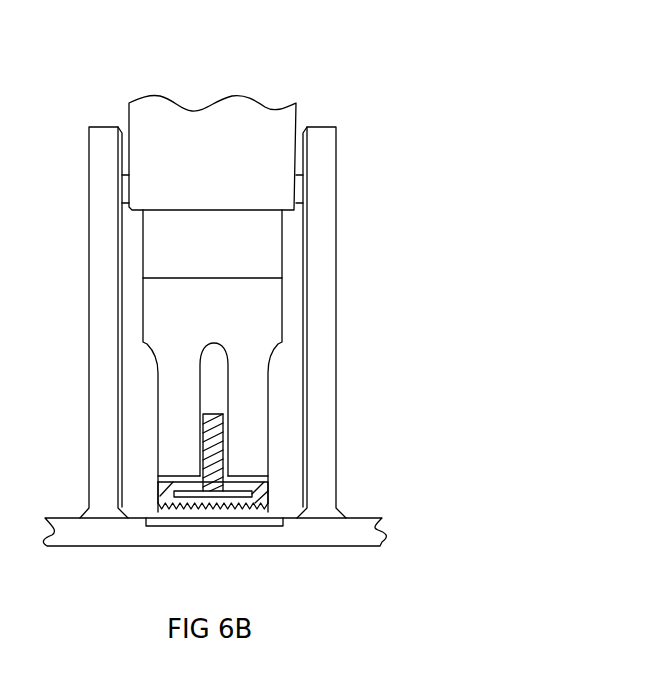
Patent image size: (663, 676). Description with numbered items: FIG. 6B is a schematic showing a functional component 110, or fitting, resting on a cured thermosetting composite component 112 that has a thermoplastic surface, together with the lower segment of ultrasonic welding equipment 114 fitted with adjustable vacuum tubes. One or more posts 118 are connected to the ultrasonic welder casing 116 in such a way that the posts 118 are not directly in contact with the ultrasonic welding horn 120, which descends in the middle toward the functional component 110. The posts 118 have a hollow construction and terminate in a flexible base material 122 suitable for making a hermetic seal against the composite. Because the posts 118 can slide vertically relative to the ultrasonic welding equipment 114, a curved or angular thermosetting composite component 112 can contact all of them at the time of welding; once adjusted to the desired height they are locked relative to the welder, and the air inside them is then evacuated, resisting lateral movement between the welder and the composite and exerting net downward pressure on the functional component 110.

The functional component 110 is at (328, 488).
The thermosetting composite component 112 is at (422, 538).
The ultrasonic welding equipment 114 is at (330, 195).
The ultrasonic welder casing 116 is at (357, 122).
The posts 118 is at (382, 225).
The ultrasonic welding horn 120 is at (313, 397).
The flexible base material 122 is at (400, 512).